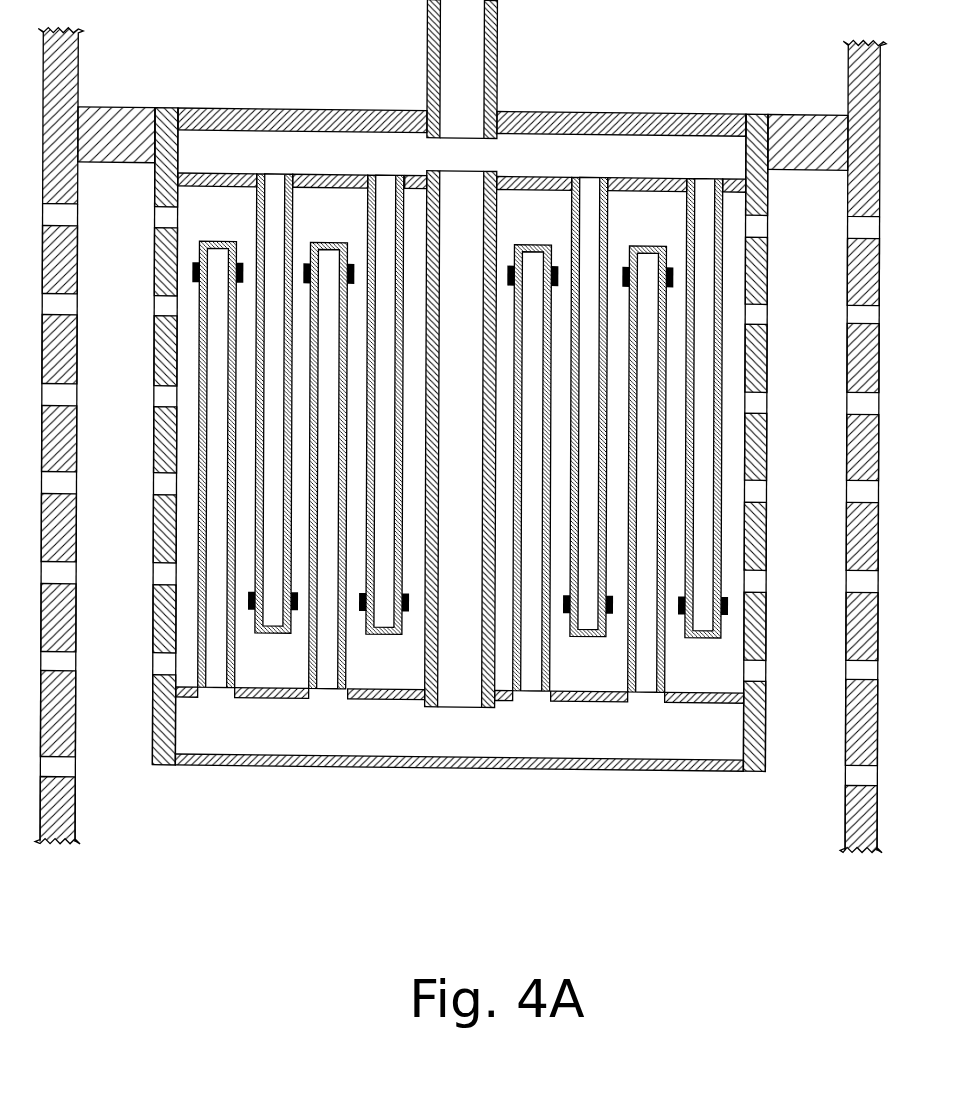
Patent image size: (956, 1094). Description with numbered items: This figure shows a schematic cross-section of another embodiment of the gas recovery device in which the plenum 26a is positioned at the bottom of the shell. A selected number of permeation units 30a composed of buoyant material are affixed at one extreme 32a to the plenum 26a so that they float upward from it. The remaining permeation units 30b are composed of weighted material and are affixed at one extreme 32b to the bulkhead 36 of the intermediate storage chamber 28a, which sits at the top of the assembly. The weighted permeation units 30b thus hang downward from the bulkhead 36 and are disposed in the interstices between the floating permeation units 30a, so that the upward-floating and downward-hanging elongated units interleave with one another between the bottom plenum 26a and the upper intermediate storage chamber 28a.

The plenum 26a is at (621, 735).
The intermediate storage chamber 28a is at (710, 147).
The permeation units 30a is at (431, 543).
The permeation units 30b is at (442, 344).
The extreme 32a is at (312, 687).
The extreme 32b is at (254, 175).
The bulkhead 36 is at (670, 186).